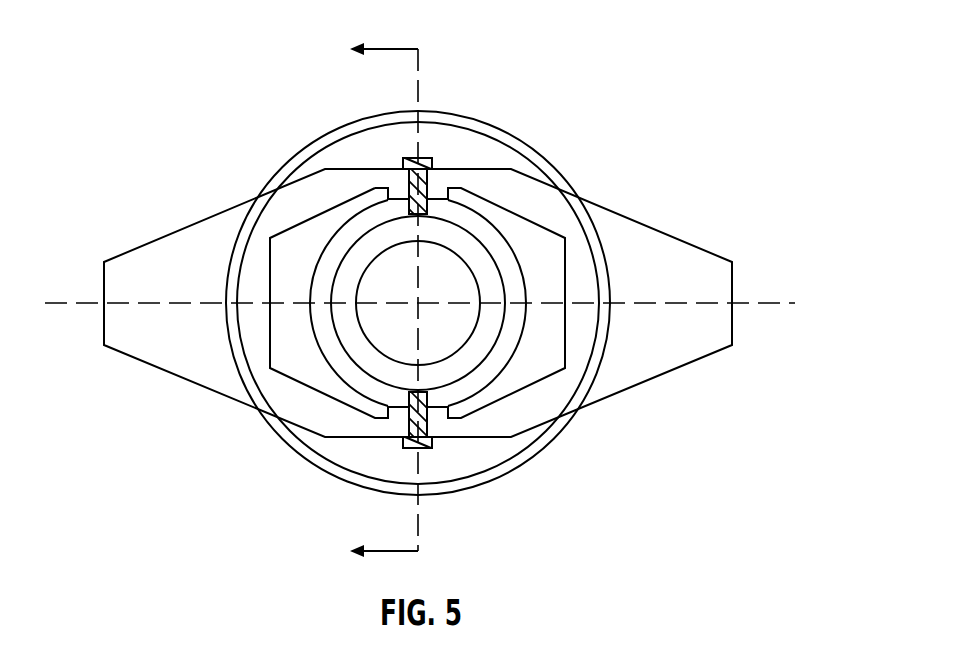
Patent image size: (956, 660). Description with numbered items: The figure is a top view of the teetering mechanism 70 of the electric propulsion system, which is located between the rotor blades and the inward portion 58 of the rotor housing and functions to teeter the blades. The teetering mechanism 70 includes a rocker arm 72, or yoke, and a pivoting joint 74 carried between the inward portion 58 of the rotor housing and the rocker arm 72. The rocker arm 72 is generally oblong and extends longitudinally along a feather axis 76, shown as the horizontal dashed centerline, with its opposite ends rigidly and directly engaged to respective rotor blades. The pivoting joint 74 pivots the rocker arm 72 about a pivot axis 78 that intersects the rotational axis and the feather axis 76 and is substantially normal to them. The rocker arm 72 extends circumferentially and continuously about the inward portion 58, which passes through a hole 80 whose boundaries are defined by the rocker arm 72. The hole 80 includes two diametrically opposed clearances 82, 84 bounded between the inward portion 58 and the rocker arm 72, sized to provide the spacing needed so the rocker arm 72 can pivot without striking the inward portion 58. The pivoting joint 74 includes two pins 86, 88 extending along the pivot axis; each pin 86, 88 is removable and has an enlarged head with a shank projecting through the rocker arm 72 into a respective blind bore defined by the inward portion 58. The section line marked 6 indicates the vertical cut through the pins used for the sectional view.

The teetering mechanism 70 is at (599, 67).
The section line 6- 6 is at (374, 303).
The rocker arm 72 is at (655, 229).
The feather axis 76 is at (148, 304).
The pivot axis 78 is at (421, 134).
The hole 80 is at (535, 240).
The clearance 82 is at (311, 366).
The clearance 84 is at (554, 367).
The inward portion 58 is at (325, 377).
The pin 86 is at (409, 158).
The pivoting joint 74 is at (441, 460).
The pin 88 is at (407, 449).